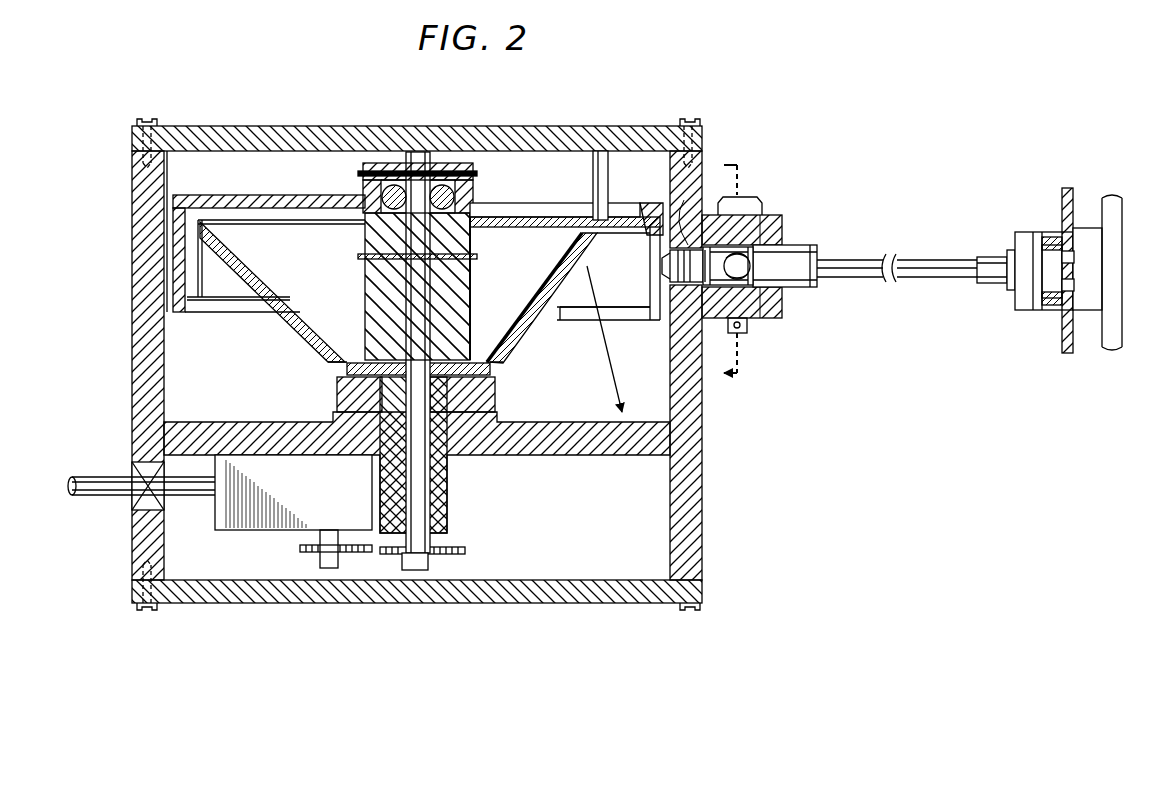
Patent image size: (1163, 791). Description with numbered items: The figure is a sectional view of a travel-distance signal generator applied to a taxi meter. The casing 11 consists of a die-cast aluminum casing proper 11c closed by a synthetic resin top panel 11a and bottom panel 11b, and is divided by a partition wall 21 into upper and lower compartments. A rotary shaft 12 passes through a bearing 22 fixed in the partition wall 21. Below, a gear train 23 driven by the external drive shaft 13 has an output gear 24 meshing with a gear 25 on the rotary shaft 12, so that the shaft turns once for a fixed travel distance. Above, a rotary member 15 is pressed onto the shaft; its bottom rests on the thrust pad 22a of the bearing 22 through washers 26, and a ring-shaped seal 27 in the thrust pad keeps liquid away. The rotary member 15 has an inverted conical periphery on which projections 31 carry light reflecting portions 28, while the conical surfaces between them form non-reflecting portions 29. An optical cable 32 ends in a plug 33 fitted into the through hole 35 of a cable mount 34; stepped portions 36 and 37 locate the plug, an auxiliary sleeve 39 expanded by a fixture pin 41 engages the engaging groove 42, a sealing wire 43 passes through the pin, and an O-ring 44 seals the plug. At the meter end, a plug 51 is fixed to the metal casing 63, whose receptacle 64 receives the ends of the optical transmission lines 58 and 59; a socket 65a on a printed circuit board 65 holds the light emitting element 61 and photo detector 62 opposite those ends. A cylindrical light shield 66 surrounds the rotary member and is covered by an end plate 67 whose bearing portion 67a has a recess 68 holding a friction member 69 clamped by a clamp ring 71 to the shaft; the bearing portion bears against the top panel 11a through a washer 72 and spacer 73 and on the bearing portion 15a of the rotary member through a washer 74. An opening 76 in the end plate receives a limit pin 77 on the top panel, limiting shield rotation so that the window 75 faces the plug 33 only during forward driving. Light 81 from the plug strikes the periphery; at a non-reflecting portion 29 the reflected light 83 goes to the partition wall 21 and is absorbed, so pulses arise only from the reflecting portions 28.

The casing 11 is at (387, 361).
The top panel 11a is at (256, 140).
The bottom panel 11b is at (232, 590).
The casing proper 11c is at (142, 216).
The rotary shaft 12 is at (416, 150).
The drive shaft 13 is at (92, 492).
The rotary member 15 is at (508, 360).
The bearing portion 15a is at (468, 297).
The partition wall 21 is at (555, 455).
The bearing 22 is at (447, 500).
The thrust pad 22a is at (495, 397).
The gear train 23 is at (236, 525).
The output gear 24 is at (302, 549).
The gear 25 is at (470, 550).
The washers 26 is at (490, 372).
The ring-shaped seal 27 is at (345, 390).
The light reflecting portions 28 is at (198, 302).
The non-reflecting portions 29 is at (290, 318).
The projections 31 is at (584, 300).
The optical cable 32 is at (862, 262).
The plug 33 is at (812, 234).
The cable mount 34 is at (770, 312).
The through hole 35 is at (775, 252).
The stepped portion 36 is at (698, 248).
The stepped portion 37 is at (708, 285).
The auxiliary sleeve 39 is at (757, 215).
The fixture pin 41 is at (752, 196).
The engaging groove 42 is at (744, 283).
The sealing wire 43 is at (748, 326).
The O-ring 44 is at (685, 283).
The plug 51 is at (1022, 306).
The optical transmission line 58 is at (1032, 248).
The optical transmission line 59 is at (1050, 298).
The light emitting element 61 is at (1076, 257).
The photo detector 62 is at (1076, 285).
The metal casing 63 is at (1070, 340).
The receptacle 64 is at (1050, 240).
The printed circuit board 65 is at (1115, 326).
The socket 65a is at (1090, 232).
The light shield 66 is at (176, 314).
The end plate 67 is at (240, 197).
The bearing portion 67a is at (474, 254).
The recess 68 is at (470, 180).
The friction member 69 is at (375, 190).
The clamp ring 71 is at (464, 200).
The washer 72 is at (378, 172).
The spacer 73 is at (385, 162).
The washer 74 is at (358, 257).
The window 75 is at (688, 240).
The opening 76 is at (652, 215).
The limit pin 77 is at (600, 180).
The light 81 is at (610, 258).
The reflected light 83 is at (612, 382).